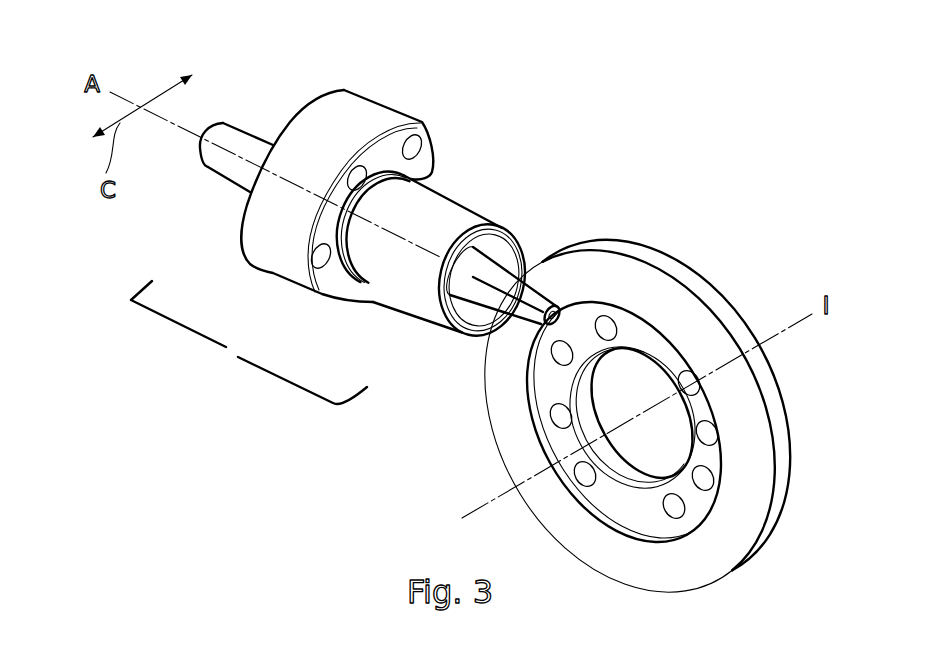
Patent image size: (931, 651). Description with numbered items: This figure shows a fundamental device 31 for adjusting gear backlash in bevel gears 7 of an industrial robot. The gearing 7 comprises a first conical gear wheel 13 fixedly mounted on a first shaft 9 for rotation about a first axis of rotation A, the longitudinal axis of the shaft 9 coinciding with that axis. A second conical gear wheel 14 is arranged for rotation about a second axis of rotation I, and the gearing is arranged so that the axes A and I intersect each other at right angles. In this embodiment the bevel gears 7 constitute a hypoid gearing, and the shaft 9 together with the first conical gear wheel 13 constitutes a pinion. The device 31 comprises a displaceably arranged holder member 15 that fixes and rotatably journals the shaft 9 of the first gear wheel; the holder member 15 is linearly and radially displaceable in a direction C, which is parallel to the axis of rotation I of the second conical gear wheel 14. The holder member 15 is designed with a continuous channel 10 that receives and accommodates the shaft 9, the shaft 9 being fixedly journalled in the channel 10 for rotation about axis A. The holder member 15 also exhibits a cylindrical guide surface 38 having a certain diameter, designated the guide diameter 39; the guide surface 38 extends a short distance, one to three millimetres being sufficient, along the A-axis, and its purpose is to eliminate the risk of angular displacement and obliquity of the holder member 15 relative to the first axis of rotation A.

The bevel gears 7 is at (637, 376).
The first shaft 9 is at (245, 143).
The continuous channel 10 is at (492, 250).
The first conical gear wheel 13 is at (538, 292).
The second conical gear wheel 14 is at (675, 308).
The holder member 15 is at (226, 347).
The device 31 is at (412, 80).
The cylindrical guide surface 38 is at (336, 255).
The guide diameter 39 is at (363, 280).